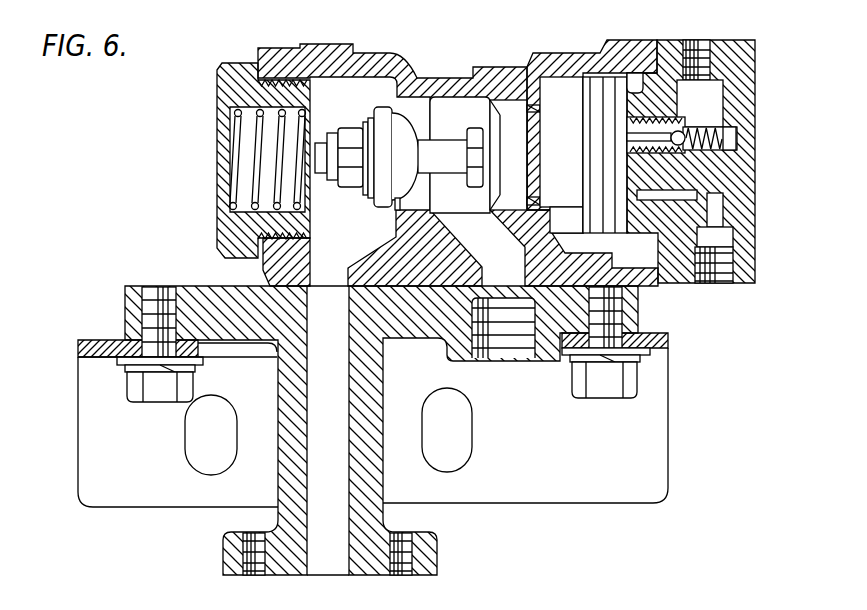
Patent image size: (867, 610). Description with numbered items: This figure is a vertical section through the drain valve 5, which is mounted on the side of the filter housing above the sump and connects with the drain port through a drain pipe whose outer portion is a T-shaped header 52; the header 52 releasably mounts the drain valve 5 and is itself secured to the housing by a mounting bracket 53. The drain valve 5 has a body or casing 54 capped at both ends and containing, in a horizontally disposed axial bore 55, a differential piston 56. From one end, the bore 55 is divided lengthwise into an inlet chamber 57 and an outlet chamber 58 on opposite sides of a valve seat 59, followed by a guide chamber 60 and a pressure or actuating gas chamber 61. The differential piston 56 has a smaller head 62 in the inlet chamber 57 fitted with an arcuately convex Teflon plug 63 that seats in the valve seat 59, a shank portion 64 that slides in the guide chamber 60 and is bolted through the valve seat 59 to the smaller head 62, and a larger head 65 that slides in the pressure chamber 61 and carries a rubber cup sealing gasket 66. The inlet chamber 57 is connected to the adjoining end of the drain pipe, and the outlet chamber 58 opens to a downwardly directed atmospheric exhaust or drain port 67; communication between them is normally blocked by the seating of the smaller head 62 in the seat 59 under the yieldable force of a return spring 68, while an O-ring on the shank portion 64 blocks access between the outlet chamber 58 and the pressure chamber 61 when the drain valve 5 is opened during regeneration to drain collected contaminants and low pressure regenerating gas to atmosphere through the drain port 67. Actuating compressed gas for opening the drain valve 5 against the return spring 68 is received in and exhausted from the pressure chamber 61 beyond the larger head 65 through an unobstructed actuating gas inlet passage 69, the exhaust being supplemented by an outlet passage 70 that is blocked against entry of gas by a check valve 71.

The drain valve 5 is at (515, 149).
The T-shaped header 52 is at (384, 389).
The mounting bracket 53 is at (672, 421).
The body or casing 54 is at (552, 52).
The axial bore 55 is at (354, 78).
The differential piston 56 is at (451, 175).
The inlet chamber 57 is at (350, 245).
The outlet chamber 58 is at (463, 125).
The valve seat 59 is at (420, 157).
The guide chamber 60 is at (505, 108).
The pressure or actuating gas chamber 61 is at (720, 148).
The smaller head 62 is at (385, 109).
The Teflon plug 63 is at (407, 186).
The shank portion 64 is at (575, 132).
The larger head 65 is at (583, 146).
The cup sealing gasket 66 is at (612, 82).
The atmospheric exhaust or drain port 67 is at (506, 360).
The return spring 68 is at (304, 120).
The actuating gas inlet passage 69 is at (726, 208).
The outlet passage 70 is at (724, 166).
The check valve 71 is at (682, 131).